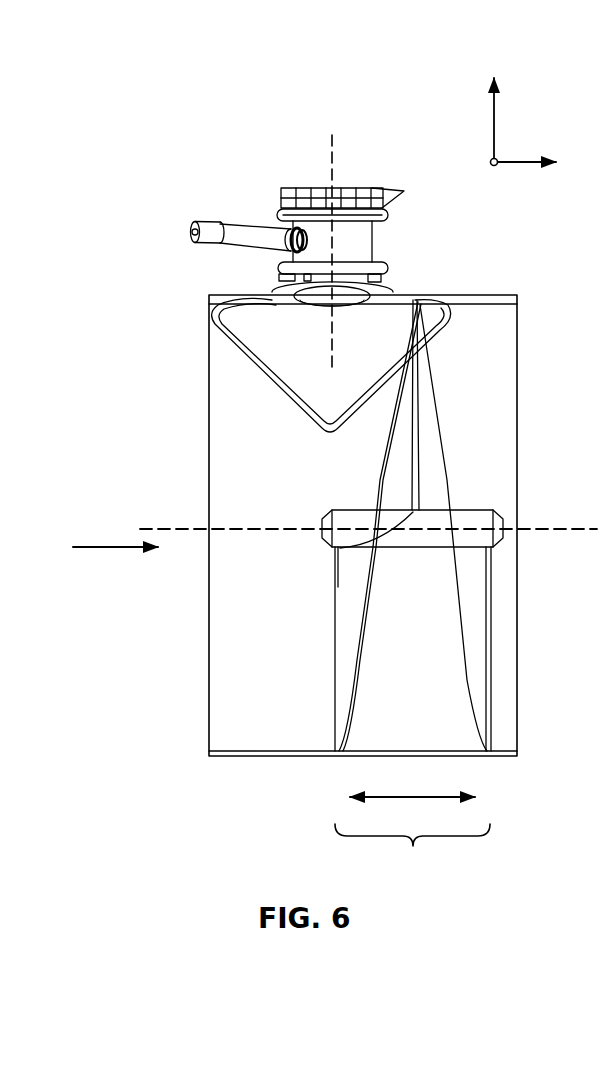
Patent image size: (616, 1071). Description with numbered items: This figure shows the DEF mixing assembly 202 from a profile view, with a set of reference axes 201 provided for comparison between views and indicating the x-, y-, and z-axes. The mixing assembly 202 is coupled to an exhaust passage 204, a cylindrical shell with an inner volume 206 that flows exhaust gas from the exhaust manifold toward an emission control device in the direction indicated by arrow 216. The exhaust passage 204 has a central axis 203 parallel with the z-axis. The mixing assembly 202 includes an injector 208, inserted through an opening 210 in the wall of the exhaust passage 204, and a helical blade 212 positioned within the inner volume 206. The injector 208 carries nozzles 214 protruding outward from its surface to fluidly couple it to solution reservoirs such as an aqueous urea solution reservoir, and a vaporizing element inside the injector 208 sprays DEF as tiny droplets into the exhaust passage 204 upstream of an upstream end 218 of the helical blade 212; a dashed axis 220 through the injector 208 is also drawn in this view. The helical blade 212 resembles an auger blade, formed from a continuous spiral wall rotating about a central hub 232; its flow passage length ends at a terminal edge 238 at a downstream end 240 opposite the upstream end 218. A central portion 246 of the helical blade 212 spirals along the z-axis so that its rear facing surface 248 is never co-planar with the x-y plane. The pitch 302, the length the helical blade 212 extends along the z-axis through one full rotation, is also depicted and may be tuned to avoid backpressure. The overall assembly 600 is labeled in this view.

The assembly 600 is at (160, 100).
The reference axes 201 is at (540, 112).
The mixing assembly 202 is at (245, 168).
The injector 208 is at (350, 188).
The central axis 220 is at (328, 152).
The nozzles 214 is at (197, 232).
The opening 210 is at (456, 333).
The inner volume 206 is at (178, 477).
The exhaust passage 204 is at (227, 390).
The rear facing surface 248 is at (428, 454).
The helical blade 212 is at (338, 636).
The terminal edge 238 is at (490, 648).
The central hub 232 is at (473, 515).
The central axis 203 is at (562, 528).
The arrow 216 is at (100, 545).
The upstream end 218 is at (305, 728).
The pitch 302 is at (388, 797).
The central portion 246 is at (412, 854).
The downstream end 240 is at (540, 770).